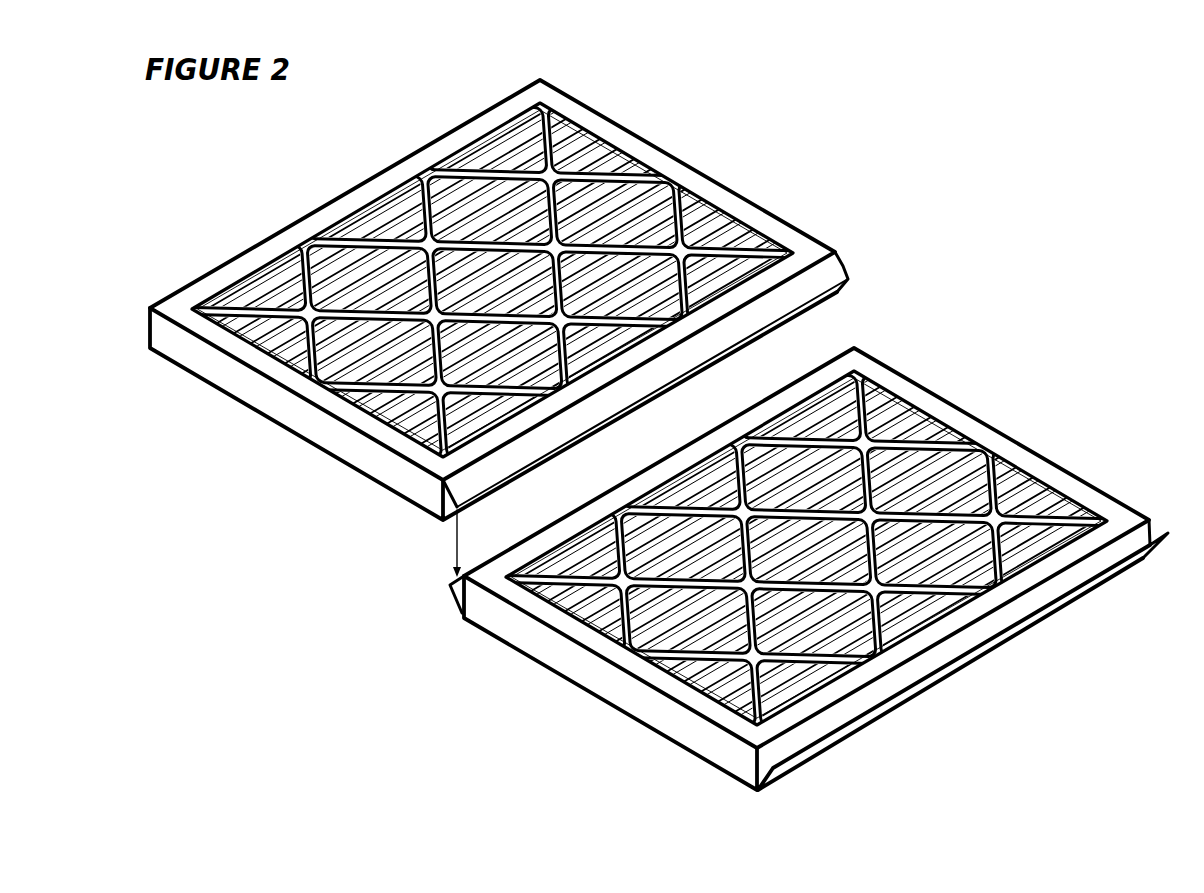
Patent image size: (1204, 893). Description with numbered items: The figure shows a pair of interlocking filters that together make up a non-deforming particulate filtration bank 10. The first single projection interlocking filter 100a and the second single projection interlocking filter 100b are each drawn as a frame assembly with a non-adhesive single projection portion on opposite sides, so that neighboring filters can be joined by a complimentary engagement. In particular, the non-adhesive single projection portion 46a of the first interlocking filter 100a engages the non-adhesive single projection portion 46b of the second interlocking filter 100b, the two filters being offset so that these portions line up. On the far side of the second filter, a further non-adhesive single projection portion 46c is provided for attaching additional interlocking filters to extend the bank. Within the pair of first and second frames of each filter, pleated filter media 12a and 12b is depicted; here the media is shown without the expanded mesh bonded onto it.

The non-deforming particulate filtration bank 10 is at (1020, 93).
The first single projection interlocking filter 100a is at (706, 101).
The second single projection interlocking filter 100b is at (1003, 383).
The pleated filter media 12a is at (512, 148).
The pleated filter media 12b is at (824, 420).
The non-adhesive single projection portion 46a is at (838, 273).
The non-adhesive single projection portion 46b is at (450, 594).
The non-adhesive single projection portion 46c is at (1151, 554).